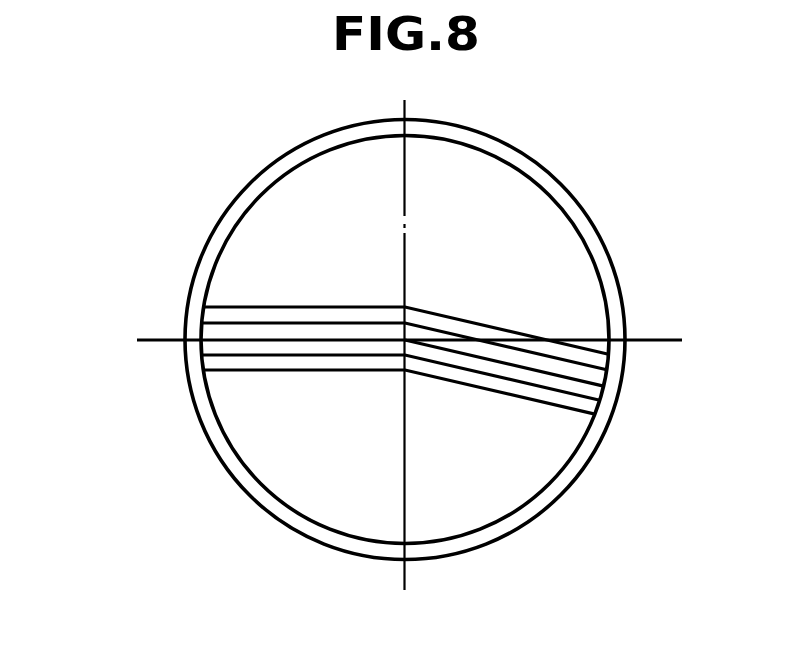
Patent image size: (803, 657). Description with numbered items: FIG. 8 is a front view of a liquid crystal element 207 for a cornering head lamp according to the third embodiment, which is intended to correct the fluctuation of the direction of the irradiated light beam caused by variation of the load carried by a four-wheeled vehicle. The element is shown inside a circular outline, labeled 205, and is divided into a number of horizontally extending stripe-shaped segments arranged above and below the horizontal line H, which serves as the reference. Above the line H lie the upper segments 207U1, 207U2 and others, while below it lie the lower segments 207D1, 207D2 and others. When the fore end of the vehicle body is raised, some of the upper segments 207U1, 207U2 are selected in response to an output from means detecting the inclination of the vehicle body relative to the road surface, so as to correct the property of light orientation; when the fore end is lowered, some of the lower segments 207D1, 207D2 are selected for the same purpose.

The lens / field of view 205 is at (495, 198).
The liquid crystal element 207 is at (548, 432).
The upper segment 207U2 is at (212, 307).
The upper segment 207U1 is at (212, 323).
The lower segment 207D1 is at (212, 355).
The lower segment 207D2 is at (212, 370).
The horizontal line H is at (663, 338).